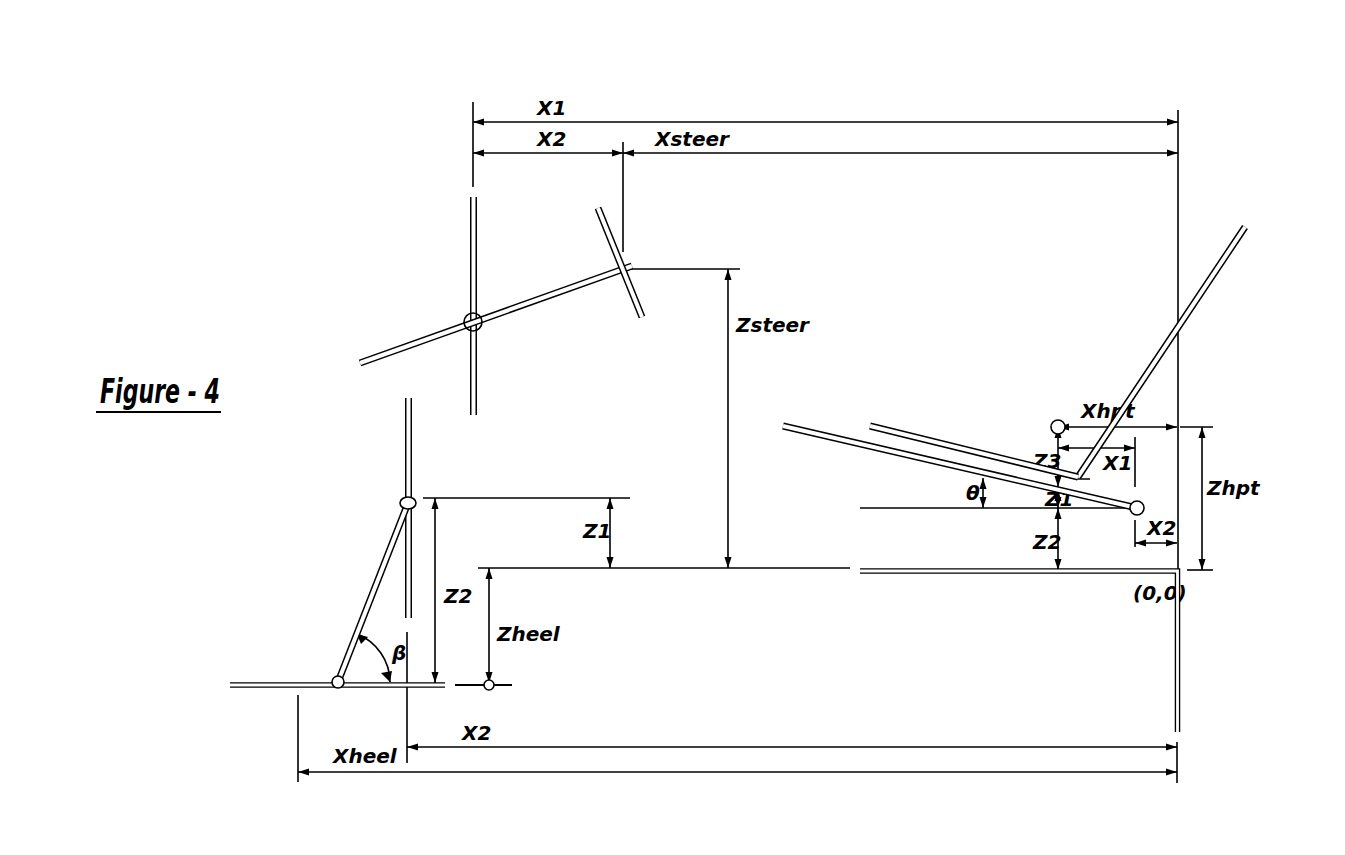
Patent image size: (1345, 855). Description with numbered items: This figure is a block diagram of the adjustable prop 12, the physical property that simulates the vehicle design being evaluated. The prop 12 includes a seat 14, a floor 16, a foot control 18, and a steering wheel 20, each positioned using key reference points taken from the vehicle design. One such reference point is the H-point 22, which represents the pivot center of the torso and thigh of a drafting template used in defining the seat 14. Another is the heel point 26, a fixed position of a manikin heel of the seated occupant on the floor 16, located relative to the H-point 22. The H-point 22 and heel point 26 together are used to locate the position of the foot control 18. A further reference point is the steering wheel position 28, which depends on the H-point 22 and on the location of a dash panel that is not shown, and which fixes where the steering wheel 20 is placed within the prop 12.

The adjustable prop 12 is at (1250, 152).
The seat 14 is at (470, 237).
The floor 16 is at (250, 685).
The foot control 18 is at (383, 562).
The steering wheel 20 is at (608, 240).
The H-point 22 is at (1053, 420).
The heel point 26 is at (492, 688).
The steering wheel position 28 is at (632, 263).